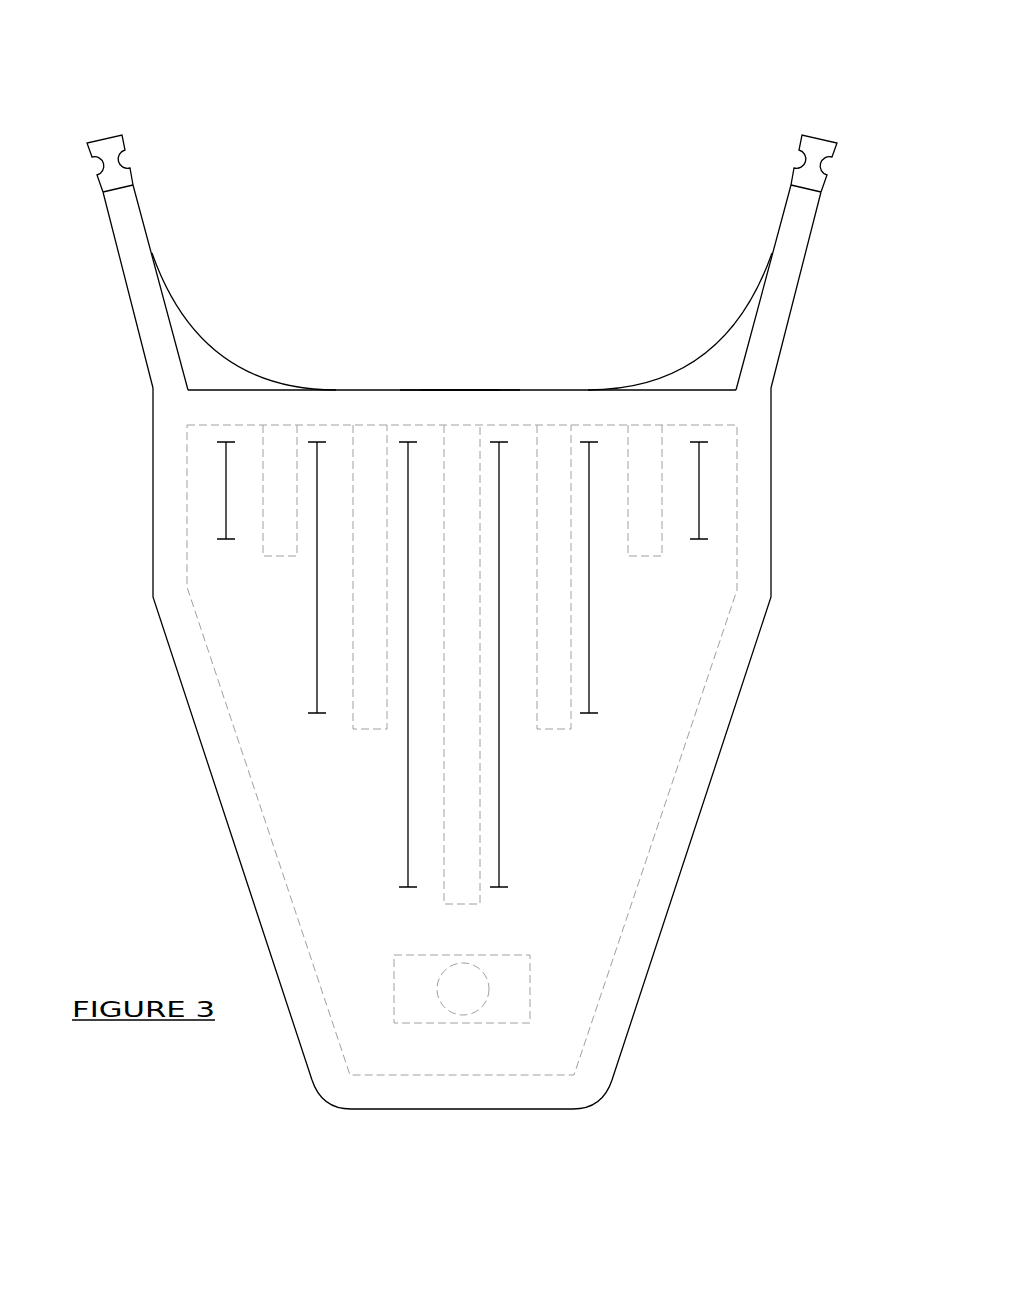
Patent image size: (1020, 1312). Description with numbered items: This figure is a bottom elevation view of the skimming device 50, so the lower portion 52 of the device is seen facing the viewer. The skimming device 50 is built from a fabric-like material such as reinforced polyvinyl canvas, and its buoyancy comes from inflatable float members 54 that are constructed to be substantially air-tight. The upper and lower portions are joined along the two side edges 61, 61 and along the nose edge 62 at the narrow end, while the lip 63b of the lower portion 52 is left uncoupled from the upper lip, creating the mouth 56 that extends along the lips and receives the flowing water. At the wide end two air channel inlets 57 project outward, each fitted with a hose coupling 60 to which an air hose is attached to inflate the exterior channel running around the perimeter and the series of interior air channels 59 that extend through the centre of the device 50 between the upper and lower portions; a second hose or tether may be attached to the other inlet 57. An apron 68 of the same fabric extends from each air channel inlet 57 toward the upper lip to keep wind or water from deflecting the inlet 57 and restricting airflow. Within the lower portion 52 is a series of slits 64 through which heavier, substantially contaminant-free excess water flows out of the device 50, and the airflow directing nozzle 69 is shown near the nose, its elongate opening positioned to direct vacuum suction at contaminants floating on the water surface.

The skimming device 50 is at (815, 82).
The lower portion 52 is at (668, 702).
The float members 54 is at (754, 485).
The mouth 56 is at (531, 281).
The air channel inlet 57 is at (132, 223).
The interior air channels 59 is at (546, 713).
The hose coupling 60 is at (107, 147).
The side edges 61 is at (153, 485).
The nose edge 62 is at (461, 1112).
The lip of the lower portion 63b is at (461, 388).
The slits 64 is at (226, 539).
The apron 68 is at (217, 365).
The airflow directing nozzle 69 is at (415, 955).